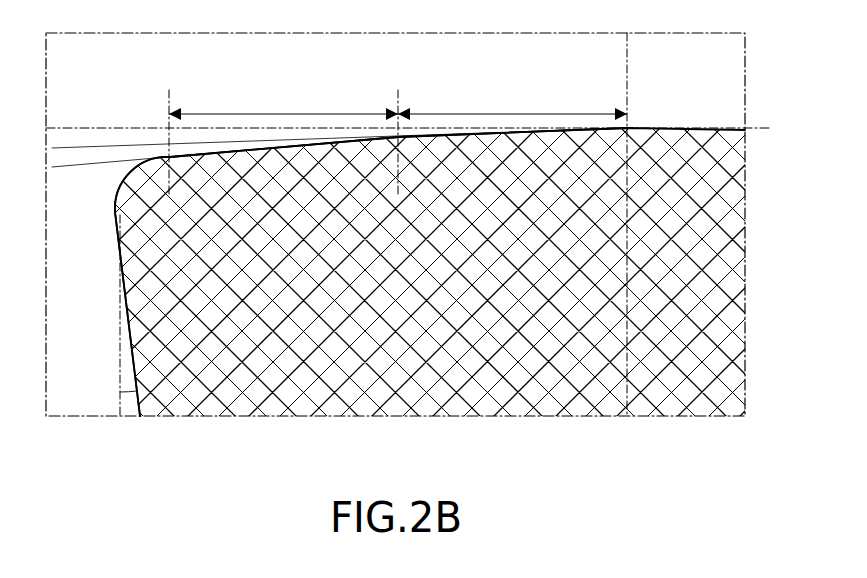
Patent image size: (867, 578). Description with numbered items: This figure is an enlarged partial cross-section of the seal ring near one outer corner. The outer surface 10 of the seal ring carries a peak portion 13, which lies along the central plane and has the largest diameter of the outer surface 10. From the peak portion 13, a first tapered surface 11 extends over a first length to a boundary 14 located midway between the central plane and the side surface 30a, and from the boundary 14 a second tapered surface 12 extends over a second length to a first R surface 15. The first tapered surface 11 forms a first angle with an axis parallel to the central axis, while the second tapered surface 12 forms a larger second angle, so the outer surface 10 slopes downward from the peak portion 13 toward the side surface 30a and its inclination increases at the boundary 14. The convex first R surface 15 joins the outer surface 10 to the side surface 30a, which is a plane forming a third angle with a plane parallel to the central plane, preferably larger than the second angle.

The outer surface 10 is at (668, 101).
The first tapered surface 11 is at (620, 133).
The second tapered surface 12 is at (397, 142).
The peak portion 13 is at (628, 128).
The boundary 14 is at (397, 136).
The first R surface 15 is at (126, 175).
The side surface 30a is at (134, 416).